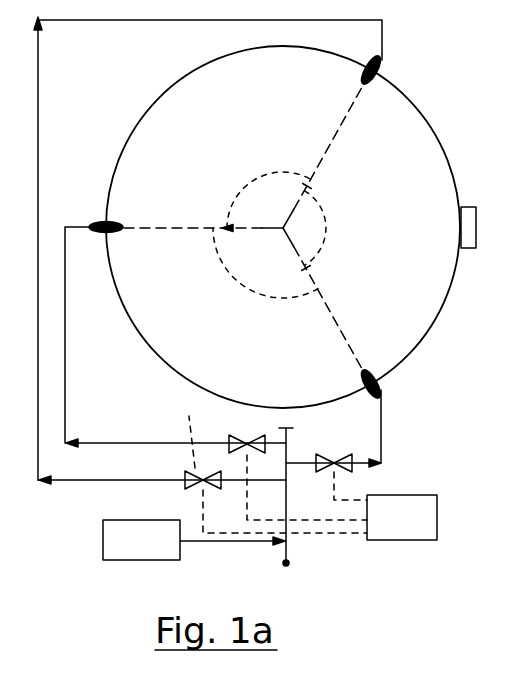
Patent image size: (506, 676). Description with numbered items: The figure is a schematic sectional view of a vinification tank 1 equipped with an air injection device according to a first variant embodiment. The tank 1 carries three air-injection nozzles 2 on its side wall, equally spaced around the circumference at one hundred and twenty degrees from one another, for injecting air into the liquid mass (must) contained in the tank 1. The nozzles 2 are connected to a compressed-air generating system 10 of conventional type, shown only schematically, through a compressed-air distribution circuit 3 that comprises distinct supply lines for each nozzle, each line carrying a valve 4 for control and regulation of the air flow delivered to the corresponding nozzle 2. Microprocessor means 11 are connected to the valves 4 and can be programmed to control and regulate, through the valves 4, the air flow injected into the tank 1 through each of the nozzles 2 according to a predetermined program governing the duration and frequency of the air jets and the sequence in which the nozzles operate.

The vinification tank 1 is at (431, 108).
The air-injection nozzle 2 is at (386, 66).
The compressed-air distribution circuit 3 is at (292, 560).
The valve 4 is at (244, 434).
The compressed-air generating system 10 is at (141, 540).
The microprocessor means 11 is at (402, 517).